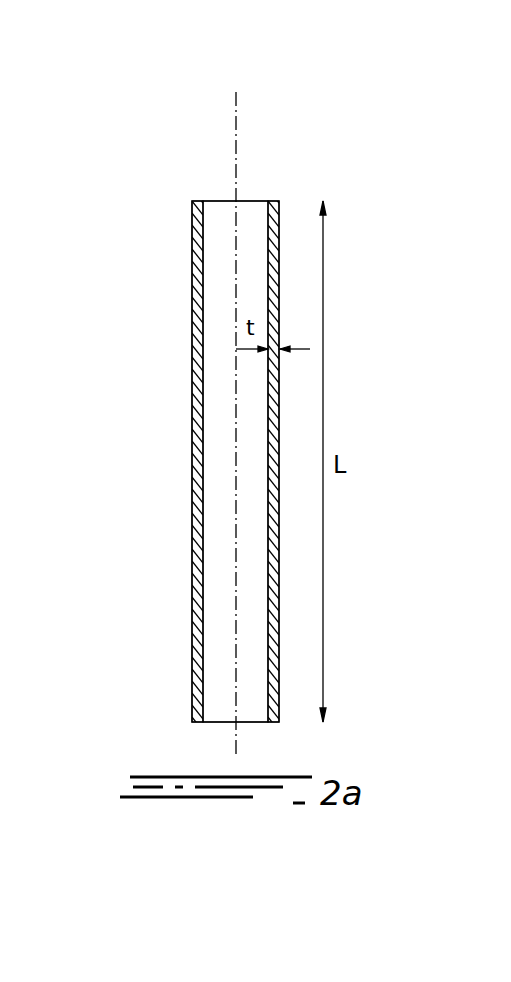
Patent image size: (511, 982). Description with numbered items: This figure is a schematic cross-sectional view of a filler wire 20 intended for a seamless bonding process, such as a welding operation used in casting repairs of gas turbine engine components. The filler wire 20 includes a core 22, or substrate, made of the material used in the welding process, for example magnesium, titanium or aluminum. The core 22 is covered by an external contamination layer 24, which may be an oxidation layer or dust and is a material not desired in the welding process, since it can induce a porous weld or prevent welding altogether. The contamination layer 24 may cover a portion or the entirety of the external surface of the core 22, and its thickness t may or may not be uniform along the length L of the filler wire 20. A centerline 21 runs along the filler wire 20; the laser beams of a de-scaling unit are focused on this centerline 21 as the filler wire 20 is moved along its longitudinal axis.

The filler wire 20 is at (278, 393).
The centerline 21 is at (238, 137).
The core 22 is at (215, 236).
The contamination layer 24 is at (193, 377).